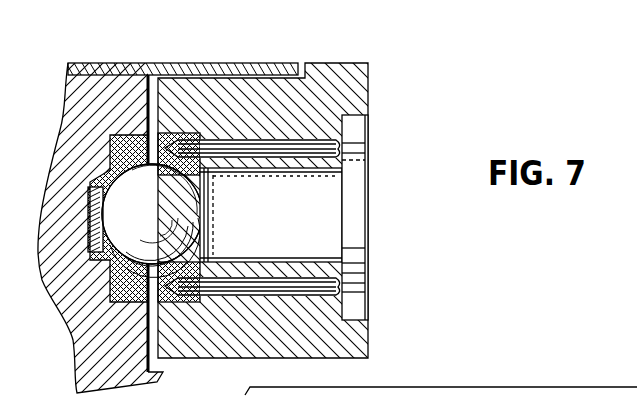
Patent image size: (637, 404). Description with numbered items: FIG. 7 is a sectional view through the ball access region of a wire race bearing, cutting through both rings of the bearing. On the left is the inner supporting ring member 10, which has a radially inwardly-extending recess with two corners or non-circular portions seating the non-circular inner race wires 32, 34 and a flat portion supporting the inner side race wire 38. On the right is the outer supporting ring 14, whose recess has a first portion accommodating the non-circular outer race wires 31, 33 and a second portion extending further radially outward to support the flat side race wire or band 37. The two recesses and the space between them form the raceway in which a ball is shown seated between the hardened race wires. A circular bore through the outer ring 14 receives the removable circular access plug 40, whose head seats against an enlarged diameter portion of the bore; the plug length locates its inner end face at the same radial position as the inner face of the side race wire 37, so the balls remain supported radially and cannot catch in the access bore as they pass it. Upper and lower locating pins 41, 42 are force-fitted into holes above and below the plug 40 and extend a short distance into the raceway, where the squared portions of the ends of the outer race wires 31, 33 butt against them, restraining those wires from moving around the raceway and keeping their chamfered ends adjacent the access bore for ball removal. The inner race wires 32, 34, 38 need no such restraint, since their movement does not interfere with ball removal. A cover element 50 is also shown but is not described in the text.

The inner supporting ring member 10 is at (121, 363).
The outer supporting ring 14 is at (318, 200).
The outer race wire 31 is at (172, 133).
The inner race wire 32 is at (254, 160).
The outer race wire 33 is at (178, 303).
The inner race wire 34 is at (103, 291).
The side race wire 37 is at (214, 220).
The side race wire 38 is at (88, 216).
The access plug 40 is at (368, 223).
The upper locating pin 41 is at (336, 135).
The lower locating pin 42 is at (308, 299).
The cover plate 50 is at (233, 63).